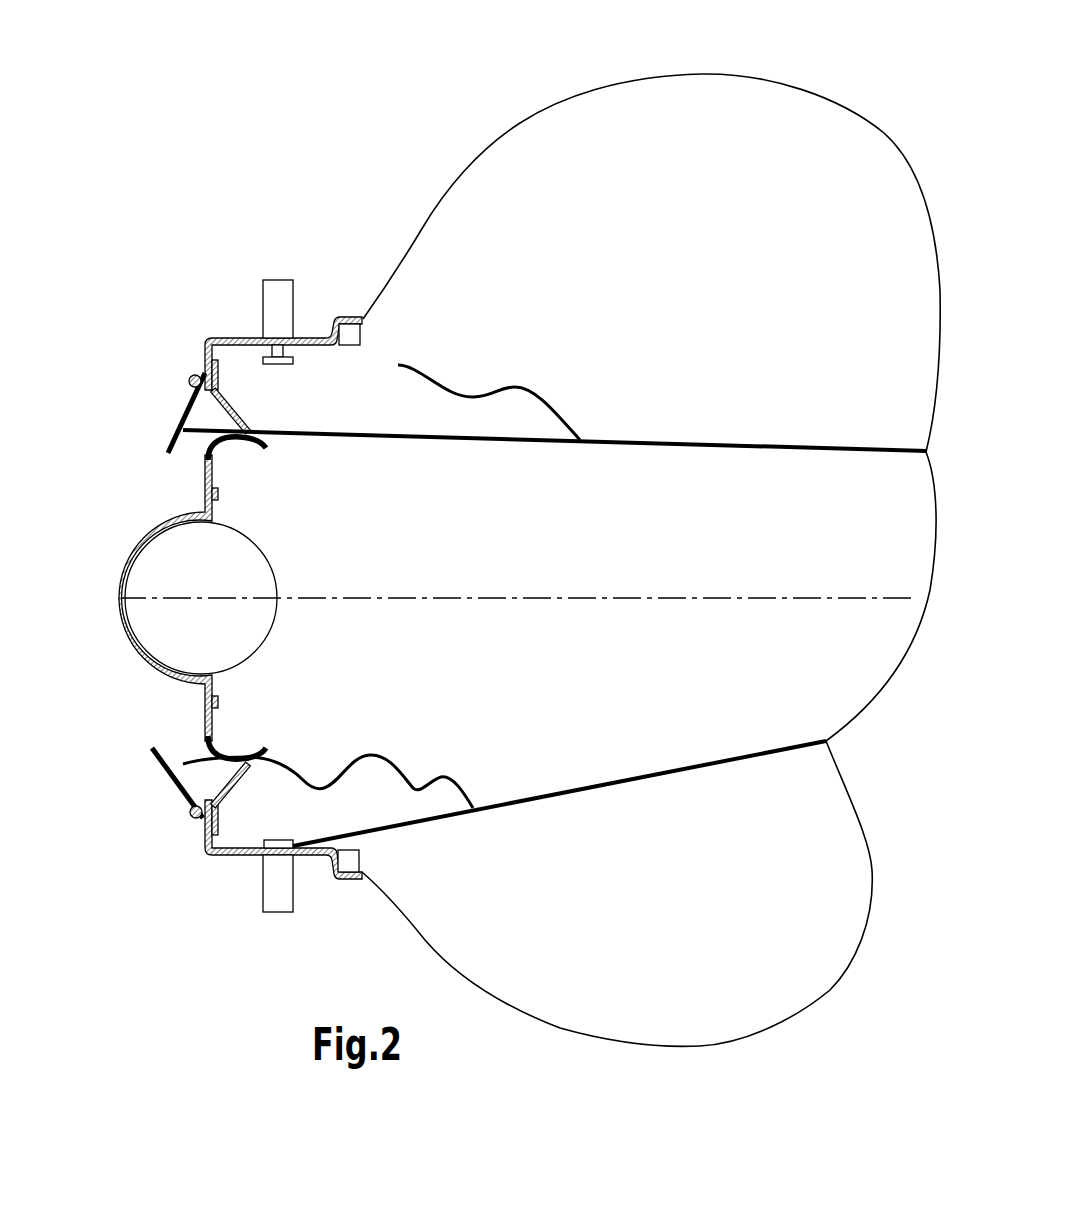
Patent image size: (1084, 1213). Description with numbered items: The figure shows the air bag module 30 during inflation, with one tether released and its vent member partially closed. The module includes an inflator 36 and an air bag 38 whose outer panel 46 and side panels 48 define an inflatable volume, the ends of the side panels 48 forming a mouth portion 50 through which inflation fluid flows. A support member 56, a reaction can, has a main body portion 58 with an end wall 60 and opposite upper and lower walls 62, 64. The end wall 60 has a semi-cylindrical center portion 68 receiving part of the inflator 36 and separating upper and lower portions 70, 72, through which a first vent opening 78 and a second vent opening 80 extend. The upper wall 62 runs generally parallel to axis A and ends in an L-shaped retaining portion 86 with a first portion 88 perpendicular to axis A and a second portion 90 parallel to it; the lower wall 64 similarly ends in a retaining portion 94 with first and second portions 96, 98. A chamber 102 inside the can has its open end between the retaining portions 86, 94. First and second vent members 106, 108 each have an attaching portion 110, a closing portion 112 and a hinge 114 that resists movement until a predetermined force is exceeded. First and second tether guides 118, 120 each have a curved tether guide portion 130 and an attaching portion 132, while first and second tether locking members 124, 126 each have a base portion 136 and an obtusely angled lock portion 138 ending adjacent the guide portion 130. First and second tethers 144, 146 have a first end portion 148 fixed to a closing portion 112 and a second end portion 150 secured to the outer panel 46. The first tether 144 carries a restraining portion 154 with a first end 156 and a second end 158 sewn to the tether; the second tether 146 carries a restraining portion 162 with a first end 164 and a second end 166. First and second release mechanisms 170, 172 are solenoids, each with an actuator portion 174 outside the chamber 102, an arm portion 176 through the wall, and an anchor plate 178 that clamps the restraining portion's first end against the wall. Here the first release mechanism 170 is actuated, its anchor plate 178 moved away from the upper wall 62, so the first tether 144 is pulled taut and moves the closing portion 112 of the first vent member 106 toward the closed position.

The air bag module 30 is at (358, 133).
The inflator 36 is at (238, 582).
The air bag 38 is at (834, 92).
The outer panel 46 is at (931, 210).
The side panels 48 is at (554, 104).
The mouth portion 50 is at (408, 954).
The support member 56 is at (207, 337).
The main body portion 58 is at (210, 857).
The end wall 60 is at (207, 730).
The upper wall 62 is at (265, 366).
The lower wall 64 is at (250, 862).
The center portion 68 is at (135, 548).
The upper portion 70 is at (205, 478).
The lower portion 72 is at (204, 712).
The first vent opening 78 is at (207, 407).
The second vent opening 80 is at (208, 786).
The retaining portion 86 is at (344, 313).
The first portion 88 is at (334, 326).
The second portion 90 is at (365, 318).
The retaining portion 94 is at (328, 887).
The first portion 96 is at (327, 867).
The second portion 98 is at (373, 884).
The chamber 102 is at (296, 668).
The first vent member 106 is at (177, 410).
The second vent member 108 is at (158, 773).
The attaching portion 110 is at (203, 365).
The closing portion 112 is at (167, 445).
The hinge 114 is at (195, 376).
The first tether guide 118 is at (226, 461).
The second tether guide 120 is at (222, 712).
The first tether locking member 124 is at (240, 396).
The second tether locking member 126 is at (228, 806).
The tether guide portion 130 is at (268, 446).
The attaching portion 132 is at (218, 488).
The base portion 136 is at (358, 352).
The lock portion 138 is at (250, 419).
The first tether 144 is at (715, 440).
The second tether 146 is at (636, 779).
The first end portion 148 is at (196, 438).
The second end portion 150 is at (891, 448).
The restraining portion 154 is at (546, 394).
The first end 156 is at (402, 366).
The second end 158 is at (588, 436).
The restraining portion 162 is at (434, 828).
The first end 164 is at (338, 822).
The second end 166 is at (486, 809).
The first release mechanism 170 is at (273, 278).
The second release mechanism 172 is at (277, 916).
The actuator portion 174 is at (281, 296).
The arm portion 176 is at (363, 348).
The anchor plate 178 is at (215, 335).
The axis A is at (656, 597).